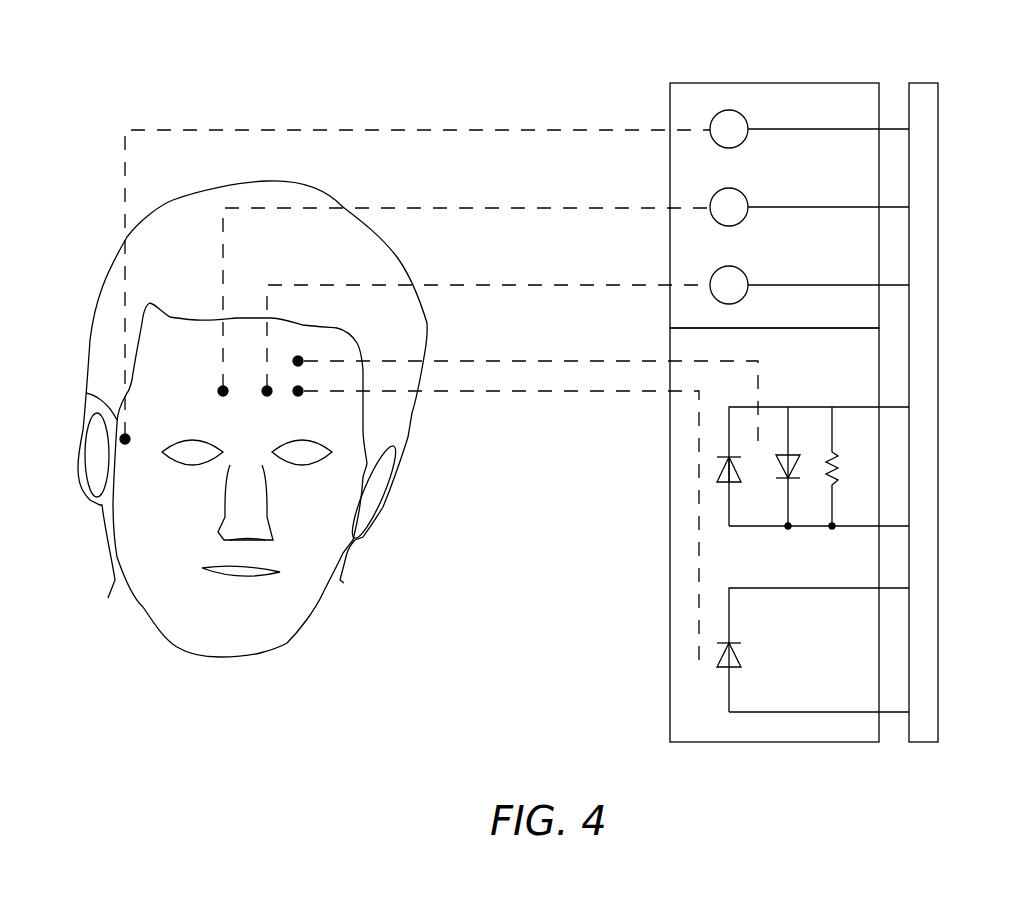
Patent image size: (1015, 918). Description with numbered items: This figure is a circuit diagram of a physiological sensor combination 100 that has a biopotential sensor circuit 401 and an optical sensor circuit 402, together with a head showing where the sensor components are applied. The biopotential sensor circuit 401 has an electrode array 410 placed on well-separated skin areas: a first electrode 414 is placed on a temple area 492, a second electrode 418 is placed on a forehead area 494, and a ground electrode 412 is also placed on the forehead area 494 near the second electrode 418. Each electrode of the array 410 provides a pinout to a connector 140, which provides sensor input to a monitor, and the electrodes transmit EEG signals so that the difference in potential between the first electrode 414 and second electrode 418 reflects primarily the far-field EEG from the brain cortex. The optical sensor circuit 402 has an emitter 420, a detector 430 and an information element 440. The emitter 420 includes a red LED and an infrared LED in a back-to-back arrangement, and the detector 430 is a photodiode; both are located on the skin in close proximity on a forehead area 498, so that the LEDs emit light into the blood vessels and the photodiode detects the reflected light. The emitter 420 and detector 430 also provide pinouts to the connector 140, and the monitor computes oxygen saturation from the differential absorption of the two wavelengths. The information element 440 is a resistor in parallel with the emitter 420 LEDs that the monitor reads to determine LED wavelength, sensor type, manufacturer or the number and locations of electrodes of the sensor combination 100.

The physiological sensor combination 100 is at (769, 55).
The connector 140 is at (922, 730).
The biopotential sensor circuit 401 is at (685, 100).
The optical sensor circuit 402 is at (684, 727).
The electrode array 410 is at (780, 110).
The ground electrode 412 is at (742, 220).
The first electrode 414 is at (742, 142).
The second electrode 418 is at (742, 298).
The emitter 420 is at (807, 476).
The detector 430 is at (742, 658).
The information element 440 is at (835, 453).
The temple area 492 is at (116, 393).
The forehead area 494 is at (247, 387).
The forehead area 498 is at (302, 377).